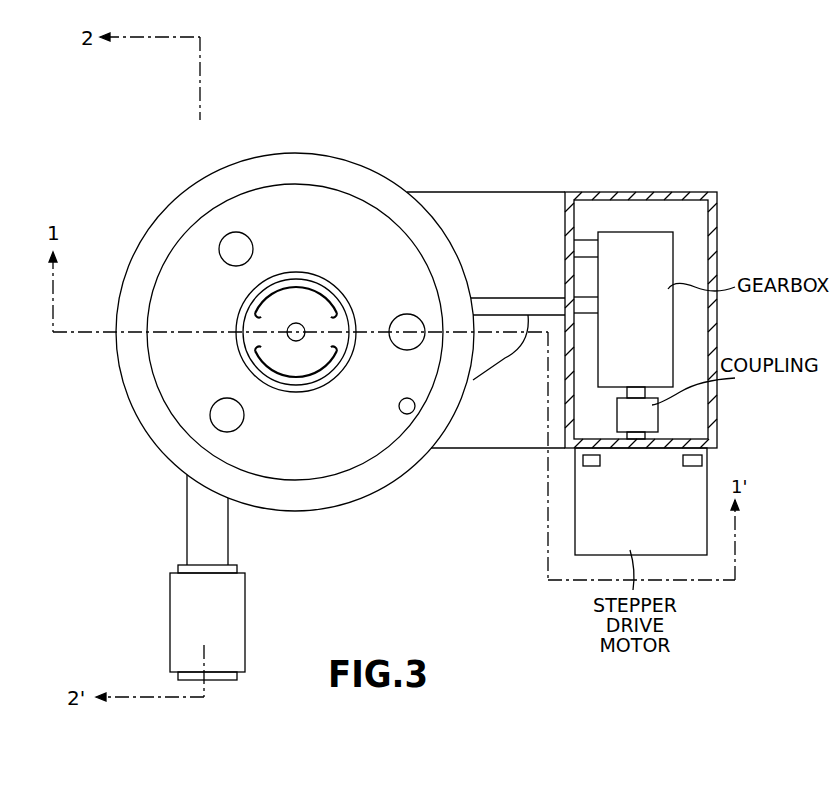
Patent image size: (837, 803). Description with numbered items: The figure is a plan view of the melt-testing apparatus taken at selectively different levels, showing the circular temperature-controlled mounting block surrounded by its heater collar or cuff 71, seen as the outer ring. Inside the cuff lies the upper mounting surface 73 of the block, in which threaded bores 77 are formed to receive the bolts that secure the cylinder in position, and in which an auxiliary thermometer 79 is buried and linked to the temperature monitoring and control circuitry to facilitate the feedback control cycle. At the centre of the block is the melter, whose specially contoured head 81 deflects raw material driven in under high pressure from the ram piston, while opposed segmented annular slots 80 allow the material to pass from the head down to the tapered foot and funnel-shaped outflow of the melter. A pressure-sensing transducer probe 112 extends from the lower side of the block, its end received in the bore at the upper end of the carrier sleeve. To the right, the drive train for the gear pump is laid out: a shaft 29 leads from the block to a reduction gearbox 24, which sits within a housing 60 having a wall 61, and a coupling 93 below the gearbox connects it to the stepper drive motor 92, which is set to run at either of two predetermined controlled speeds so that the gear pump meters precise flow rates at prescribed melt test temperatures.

The gearbox 24 is at (651, 341).
The shaft 29 is at (497, 295).
The gearbox housing 60 is at (660, 297).
The housing wall 61 is at (718, 248).
The heater collar 71 is at (330, 495).
The upper mounting surface 73 is at (313, 450).
The threaded bores 77 is at (407, 350).
The auxiliary thermometer 79 is at (410, 414).
The segmented annular slots 80 is at (253, 352).
The head 81 is at (298, 308).
The stepper drive motor 92 is at (648, 534).
The coupling 93 is at (648, 418).
The pressure-sensing transducer probe 112 is at (200, 530).